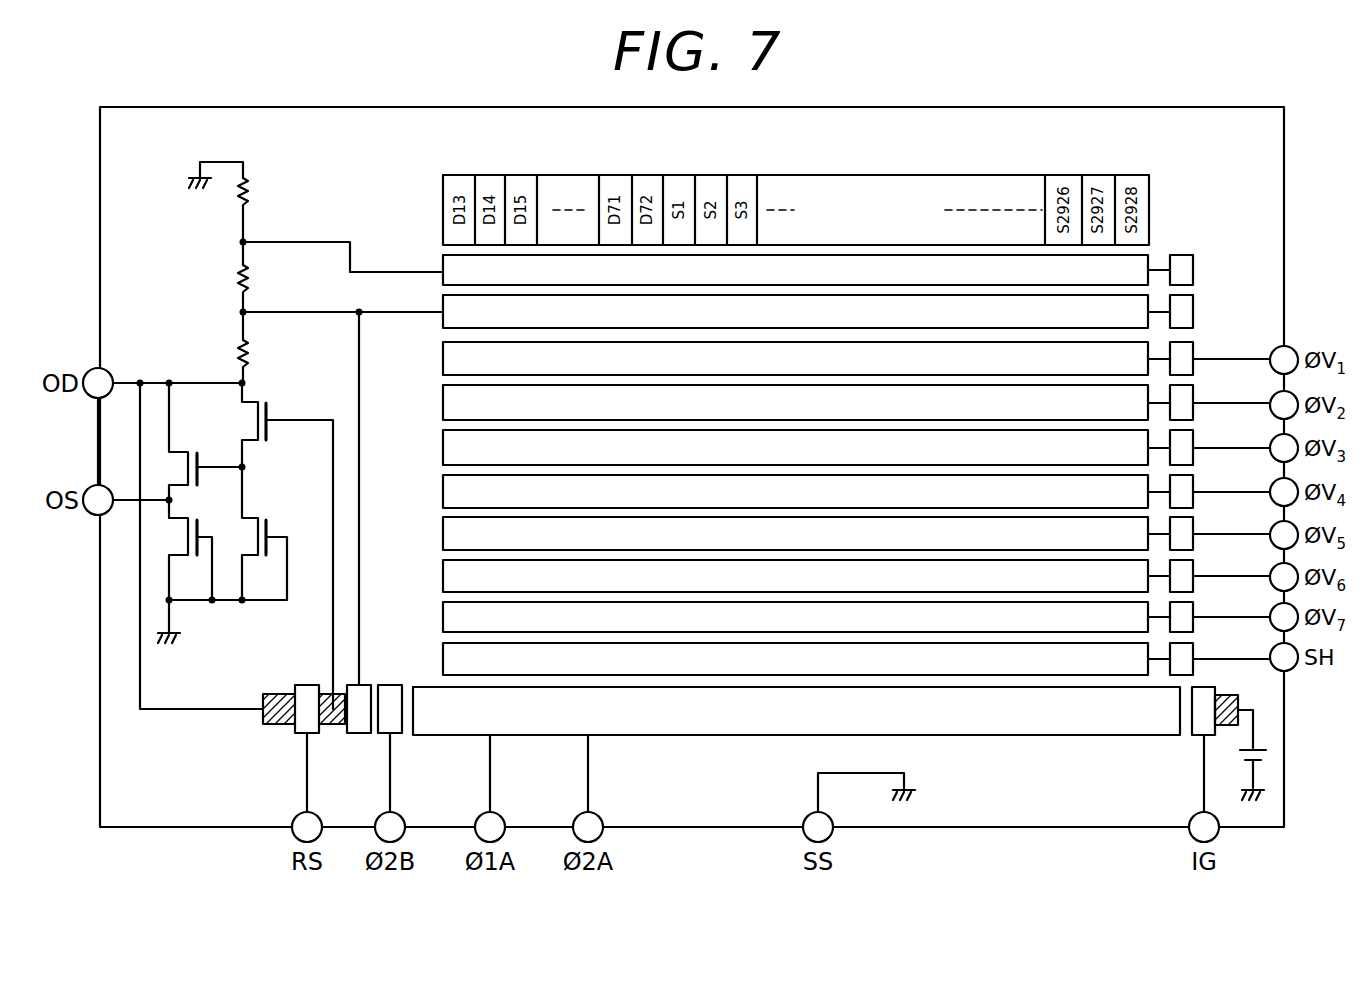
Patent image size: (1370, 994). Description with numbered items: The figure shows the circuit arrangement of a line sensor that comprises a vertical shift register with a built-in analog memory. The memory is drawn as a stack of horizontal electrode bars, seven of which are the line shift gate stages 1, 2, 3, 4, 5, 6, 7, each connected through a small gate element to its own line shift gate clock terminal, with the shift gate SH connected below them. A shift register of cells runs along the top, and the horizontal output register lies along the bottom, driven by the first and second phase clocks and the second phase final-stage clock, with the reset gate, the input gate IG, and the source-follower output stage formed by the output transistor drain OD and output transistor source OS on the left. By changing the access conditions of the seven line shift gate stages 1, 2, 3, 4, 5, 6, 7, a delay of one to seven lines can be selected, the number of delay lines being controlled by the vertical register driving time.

The first line shift gate stage 1 is at (856, 359).
The second line shift gate stage 2 is at (856, 402).
The third line shift gate stage 3 is at (856, 447).
The fourth line shift gate stage 4 is at (856, 492).
The fifth line shift gate stage 5 is at (856, 534).
The sixth line shift gate stage 6 is at (856, 576).
The seventh line shift gate stage 7 is at (856, 617).